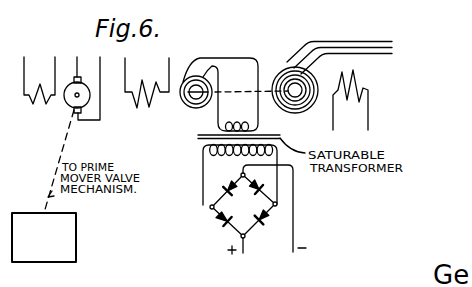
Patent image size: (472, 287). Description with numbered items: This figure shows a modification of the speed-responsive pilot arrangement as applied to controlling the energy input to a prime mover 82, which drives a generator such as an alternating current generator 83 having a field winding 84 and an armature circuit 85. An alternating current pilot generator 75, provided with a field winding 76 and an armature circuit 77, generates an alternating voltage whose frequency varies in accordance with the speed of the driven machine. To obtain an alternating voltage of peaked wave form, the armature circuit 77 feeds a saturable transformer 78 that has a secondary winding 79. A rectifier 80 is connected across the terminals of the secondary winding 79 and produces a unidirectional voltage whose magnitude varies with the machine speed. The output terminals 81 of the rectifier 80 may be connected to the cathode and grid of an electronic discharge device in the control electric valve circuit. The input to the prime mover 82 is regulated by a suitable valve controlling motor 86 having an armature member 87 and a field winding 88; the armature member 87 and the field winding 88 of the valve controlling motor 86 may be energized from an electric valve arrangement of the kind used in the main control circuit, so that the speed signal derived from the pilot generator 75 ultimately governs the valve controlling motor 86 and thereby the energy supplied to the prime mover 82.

The alternating current pilot generator 75 is at (147, 92).
The field winding 76 is at (142, 80).
The armature circuit 77 is at (186, 104).
The saturable transformer 78 is at (199, 141).
The secondary winding 79 is at (240, 175).
The rectifier 80 is at (253, 210).
The output terminals 81 is at (292, 244).
The prime mover 82 is at (76, 236).
The alternating current generator 83 is at (319, 137).
The field winding 84 is at (355, 73).
The armature circuit 85 is at (279, 72).
The valve controlling motor 86 is at (40, 94).
The armature member 87 is at (81, 80).
The field winding 88 is at (39, 84).